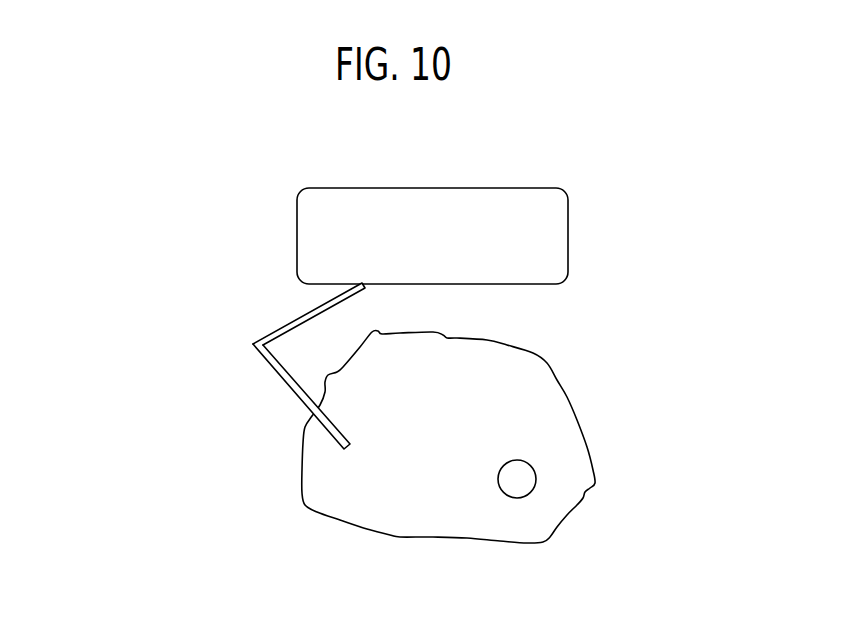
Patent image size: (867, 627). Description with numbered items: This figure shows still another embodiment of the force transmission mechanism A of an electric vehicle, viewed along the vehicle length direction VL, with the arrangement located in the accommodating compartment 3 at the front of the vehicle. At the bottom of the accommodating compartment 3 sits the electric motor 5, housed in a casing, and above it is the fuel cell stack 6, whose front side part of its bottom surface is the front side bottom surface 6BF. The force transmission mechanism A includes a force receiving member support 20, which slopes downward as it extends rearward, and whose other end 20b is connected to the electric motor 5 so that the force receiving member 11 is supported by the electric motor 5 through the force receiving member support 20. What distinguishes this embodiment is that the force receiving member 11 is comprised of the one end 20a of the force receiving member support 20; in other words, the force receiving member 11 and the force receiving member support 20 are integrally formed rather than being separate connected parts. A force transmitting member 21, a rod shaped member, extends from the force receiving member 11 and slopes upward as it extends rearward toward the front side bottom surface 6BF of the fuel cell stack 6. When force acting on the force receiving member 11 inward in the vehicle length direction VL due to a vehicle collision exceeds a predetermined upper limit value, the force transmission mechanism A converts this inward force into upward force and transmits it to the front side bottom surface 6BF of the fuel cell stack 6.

The accommodating compartment 3 is at (174, 537).
The electric motor 5 is at (558, 521).
The fuel cell stack 6 is at (510, 188).
The front side bottom surface 6BF is at (370, 284).
The force receiving member 11 is at (252, 346).
The force receiving member support 20 is at (301, 402).
The one end of force receiving member support 20a is at (253, 346).
The other end of force receiving member support 20b is at (343, 445).
The force transmitting member 21 is at (311, 311).
The force transmission mechanism A is at (132, 393).
The vehicle length direction VL is at (763, 543).